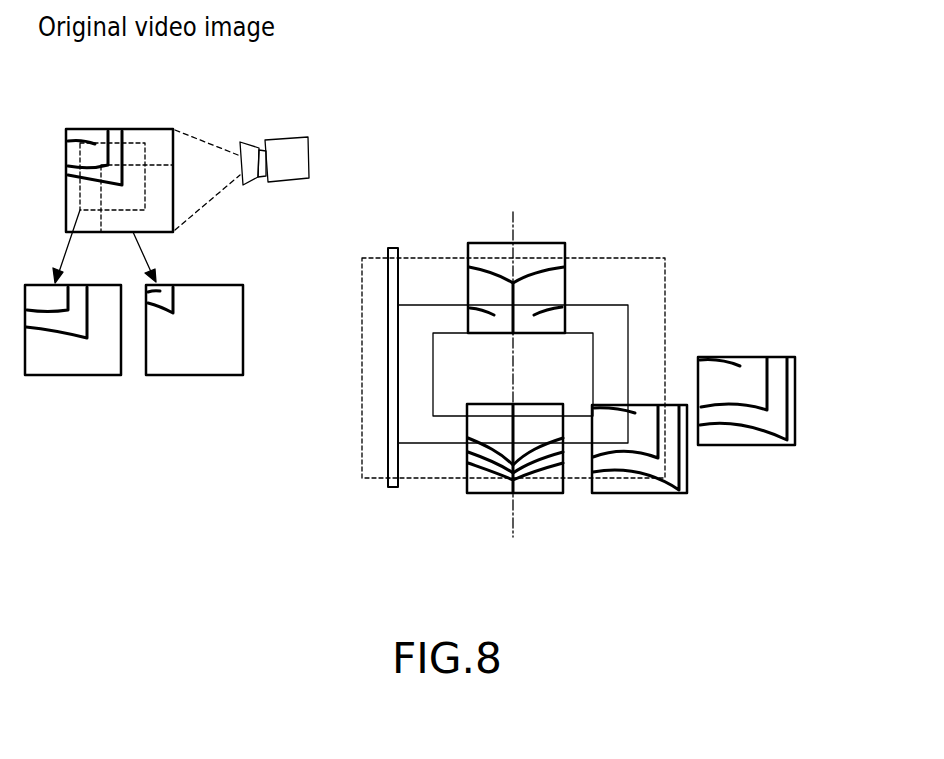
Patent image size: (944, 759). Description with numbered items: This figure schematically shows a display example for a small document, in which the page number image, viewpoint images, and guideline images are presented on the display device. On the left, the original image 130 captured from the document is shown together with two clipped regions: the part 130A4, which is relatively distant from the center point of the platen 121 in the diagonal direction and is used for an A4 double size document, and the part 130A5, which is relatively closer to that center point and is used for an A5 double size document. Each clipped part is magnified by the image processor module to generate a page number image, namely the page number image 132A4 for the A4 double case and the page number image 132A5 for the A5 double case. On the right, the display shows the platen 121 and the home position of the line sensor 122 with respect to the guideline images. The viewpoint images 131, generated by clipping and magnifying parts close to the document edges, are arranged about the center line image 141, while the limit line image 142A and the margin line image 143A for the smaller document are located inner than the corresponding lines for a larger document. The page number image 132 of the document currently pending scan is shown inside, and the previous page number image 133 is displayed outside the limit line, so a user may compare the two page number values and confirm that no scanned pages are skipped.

The original image 130 is at (86, 128).
The part 130A5 is at (134, 138).
The part 130A4 is at (157, 165).
The page number image 132 is at (309, 150).
The page number image 132A5 is at (108, 377).
The page number image 132A4 is at (157, 378).
The platen 121 is at (362, 432).
The line sensor 122 is at (388, 325).
The viewpoint image 131 is at (542, 243).
The previous page number image 133 is at (797, 397).
The center line image 141 is at (513, 513).
The limit line image 142A is at (435, 305).
The margin line image 143A is at (593, 357).